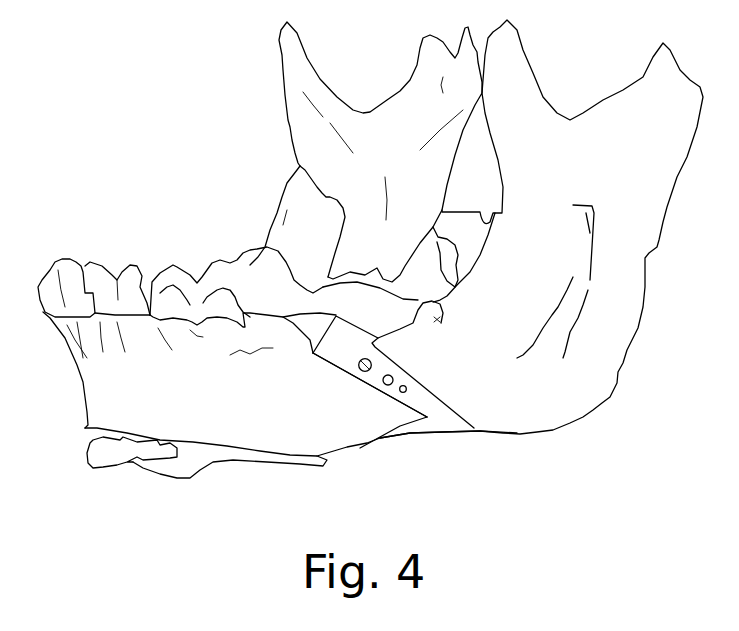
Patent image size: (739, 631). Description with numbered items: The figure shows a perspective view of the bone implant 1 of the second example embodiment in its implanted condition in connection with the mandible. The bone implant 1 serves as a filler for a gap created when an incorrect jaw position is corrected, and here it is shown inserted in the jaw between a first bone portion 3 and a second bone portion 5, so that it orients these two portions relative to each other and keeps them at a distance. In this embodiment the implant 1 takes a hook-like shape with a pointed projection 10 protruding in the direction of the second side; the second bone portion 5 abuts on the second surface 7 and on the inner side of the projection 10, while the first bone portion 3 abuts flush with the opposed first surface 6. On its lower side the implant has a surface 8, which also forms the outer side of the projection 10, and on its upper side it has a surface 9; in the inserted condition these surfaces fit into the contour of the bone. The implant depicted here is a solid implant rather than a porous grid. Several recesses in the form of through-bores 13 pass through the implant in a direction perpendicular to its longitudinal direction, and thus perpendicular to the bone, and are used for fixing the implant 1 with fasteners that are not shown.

The bone implant 1 is at (478, 446).
The first bone portion 3 is at (488, 403).
The second bone portion 5 is at (372, 415).
The first surface 6 is at (422, 378).
The second surface 7 is at (360, 388).
The lower surface 8 is at (444, 444).
The upper surface 9 is at (324, 341).
The pointed projection 10 is at (417, 430).
The through-bore 13 is at (359, 366).